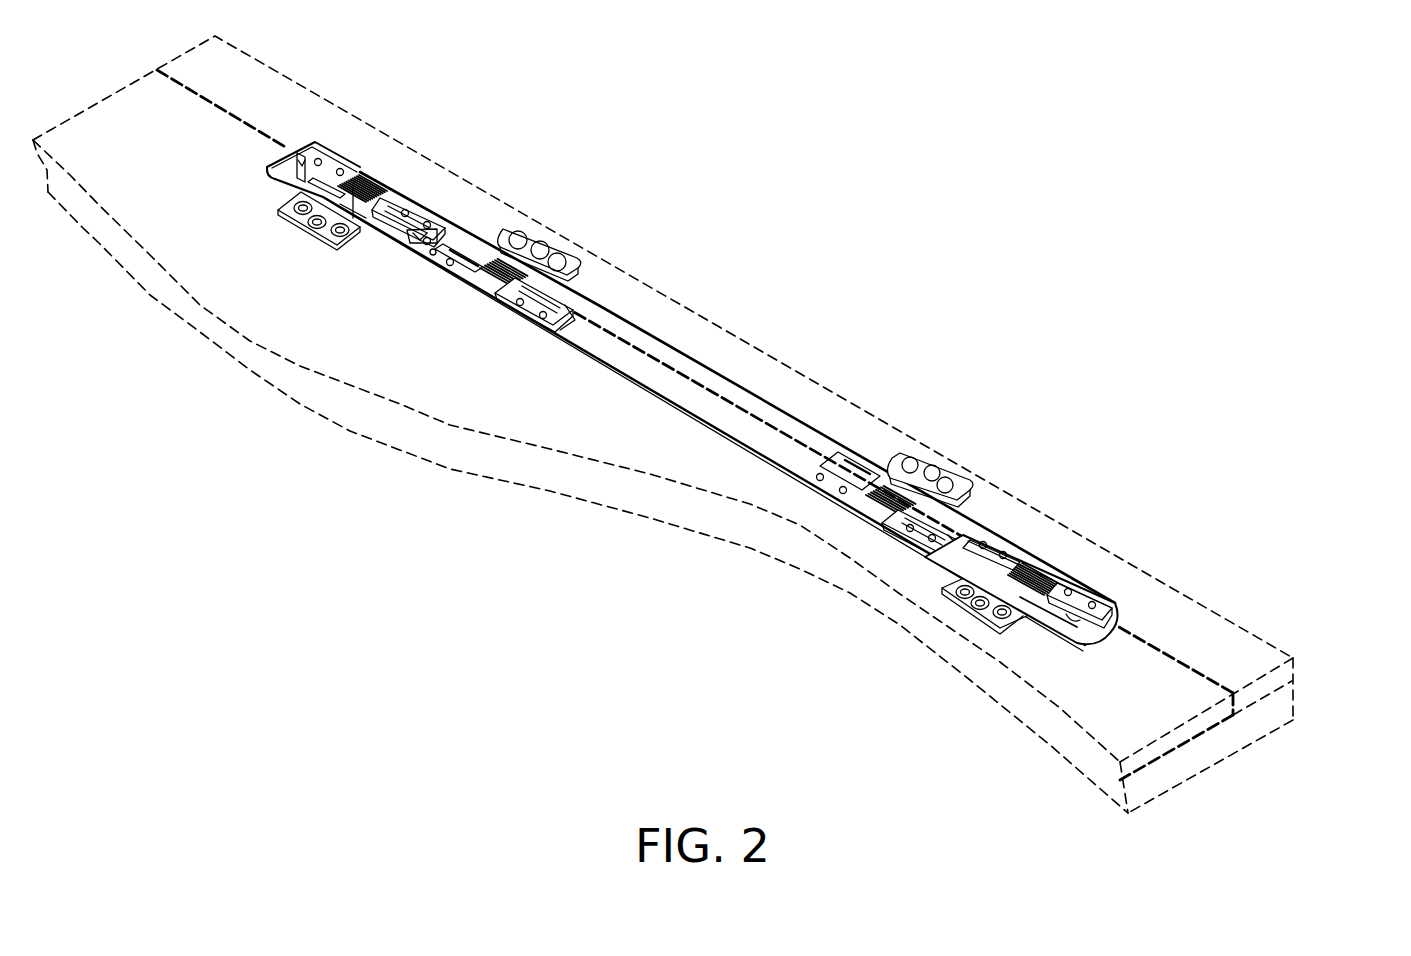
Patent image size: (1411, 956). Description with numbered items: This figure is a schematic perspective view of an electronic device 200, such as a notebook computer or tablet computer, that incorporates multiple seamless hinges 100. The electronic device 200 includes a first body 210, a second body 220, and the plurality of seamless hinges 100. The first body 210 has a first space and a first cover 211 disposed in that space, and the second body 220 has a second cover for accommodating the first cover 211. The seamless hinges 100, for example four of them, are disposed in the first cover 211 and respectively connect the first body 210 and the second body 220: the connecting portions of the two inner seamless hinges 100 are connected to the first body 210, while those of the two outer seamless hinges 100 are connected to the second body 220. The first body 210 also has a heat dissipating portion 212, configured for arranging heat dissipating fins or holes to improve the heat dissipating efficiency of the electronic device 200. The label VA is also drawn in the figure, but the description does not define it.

The seamless hinge 100 is at (388, 177).
The electronic device 200 is at (1403, 867).
The first body 210 is at (1233, 738).
The first cover 211 is at (1110, 618).
The heat dissipating portion 212 is at (1292, 673).
The second body 220 is at (1122, 764).
The virtual axis VA is at (1287, 723).